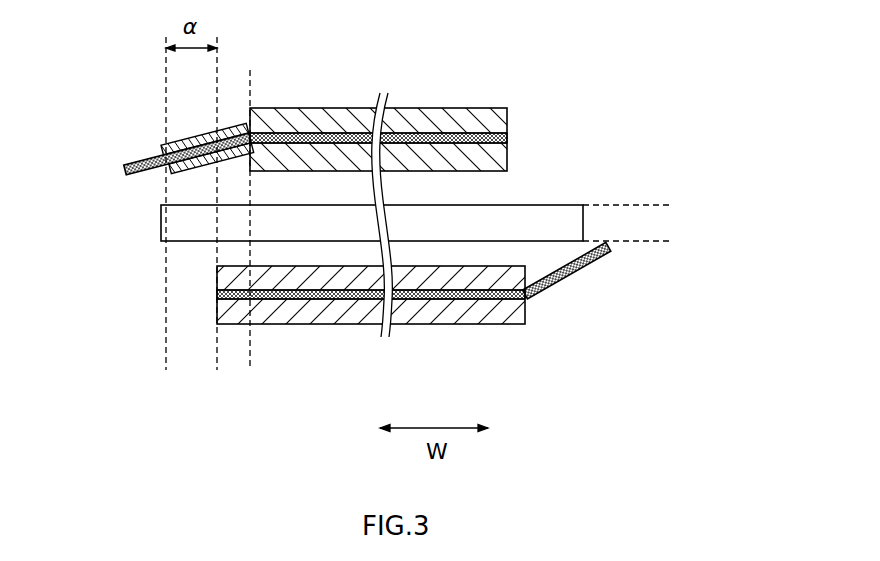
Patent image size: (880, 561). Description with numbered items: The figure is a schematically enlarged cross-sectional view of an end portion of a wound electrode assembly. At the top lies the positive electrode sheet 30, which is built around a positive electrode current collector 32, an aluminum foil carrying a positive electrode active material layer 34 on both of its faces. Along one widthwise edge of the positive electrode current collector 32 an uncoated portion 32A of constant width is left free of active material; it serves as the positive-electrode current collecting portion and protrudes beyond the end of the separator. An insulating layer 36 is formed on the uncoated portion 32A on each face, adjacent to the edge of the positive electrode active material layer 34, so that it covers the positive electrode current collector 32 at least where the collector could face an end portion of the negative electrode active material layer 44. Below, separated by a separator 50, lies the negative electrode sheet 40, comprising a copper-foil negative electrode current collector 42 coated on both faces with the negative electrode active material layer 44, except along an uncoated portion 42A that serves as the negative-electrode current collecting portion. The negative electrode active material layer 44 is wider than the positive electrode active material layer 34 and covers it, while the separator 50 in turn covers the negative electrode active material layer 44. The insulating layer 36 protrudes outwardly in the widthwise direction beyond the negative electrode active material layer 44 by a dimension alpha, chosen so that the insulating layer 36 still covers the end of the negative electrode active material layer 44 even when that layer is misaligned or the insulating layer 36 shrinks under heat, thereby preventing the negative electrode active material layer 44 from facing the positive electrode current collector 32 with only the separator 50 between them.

The positive electrode sheet 30 is at (379, 95).
The positive electrode current collector 32 is at (507, 138).
The uncoated portion 32A is at (135, 161).
The positive electrode active material layer 34 is at (507, 120).
The insulating layer 36 is at (192, 172).
The negative electrode sheet 40 is at (359, 329).
The negative electrode current collector 42 is at (371, 294).
The uncoated portion 42A is at (585, 268).
The negative electrode active material layer 44 is at (219, 278).
The separator 50 is at (161, 222).